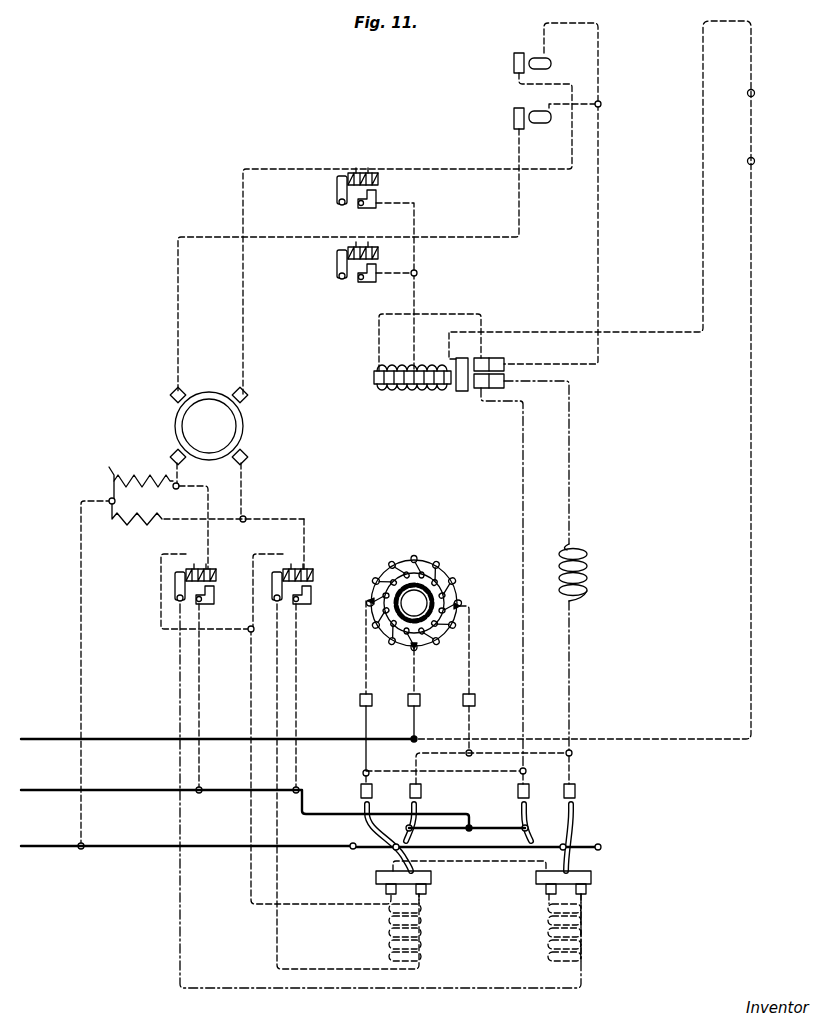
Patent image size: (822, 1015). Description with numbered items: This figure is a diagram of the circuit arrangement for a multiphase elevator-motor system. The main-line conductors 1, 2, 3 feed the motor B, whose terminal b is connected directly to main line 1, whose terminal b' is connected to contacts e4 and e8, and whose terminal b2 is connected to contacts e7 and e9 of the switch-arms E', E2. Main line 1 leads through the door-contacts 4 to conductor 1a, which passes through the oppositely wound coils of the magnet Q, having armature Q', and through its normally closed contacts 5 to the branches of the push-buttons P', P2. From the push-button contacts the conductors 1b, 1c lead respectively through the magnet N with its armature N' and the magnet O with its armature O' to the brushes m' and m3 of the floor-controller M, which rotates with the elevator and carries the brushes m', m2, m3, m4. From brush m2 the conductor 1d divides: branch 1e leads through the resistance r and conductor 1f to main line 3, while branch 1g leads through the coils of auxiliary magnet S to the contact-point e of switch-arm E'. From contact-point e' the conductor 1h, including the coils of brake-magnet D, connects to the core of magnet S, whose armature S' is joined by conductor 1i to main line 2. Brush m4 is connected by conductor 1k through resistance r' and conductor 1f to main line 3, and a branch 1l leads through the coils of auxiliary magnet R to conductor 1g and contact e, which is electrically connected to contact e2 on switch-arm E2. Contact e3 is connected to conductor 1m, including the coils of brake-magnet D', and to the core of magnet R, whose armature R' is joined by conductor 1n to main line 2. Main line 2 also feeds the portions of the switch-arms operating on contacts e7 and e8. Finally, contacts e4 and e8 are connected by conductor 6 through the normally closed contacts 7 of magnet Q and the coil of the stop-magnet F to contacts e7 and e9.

The push-button P' is at (538, 193).
The push-button P2 is at (540, 115).
The conductor 1b is at (407, 233).
The conductor 1c is at (335, 261).
The door-contacts 4 is at (759, 160).
The conductor 1a is at (593, 380).
The magnet N is at (340, 186).
The armature N' is at (386, 275).
The magnet O is at (345, 260).
The armature O' is at (387, 267).
The magnet Q is at (427, 352).
The armature Q' is at (468, 387).
The contacts 5 is at (489, 355).
The contacts 7 is at (496, 390).
The conductor 6 is at (502, 579).
The stop-magnet F is at (557, 567).
The floor-controller M is at (209, 426).
The brush m3 is at (163, 395).
The brush m' is at (252, 393).
The brush m4 is at (165, 452).
The brush m2 is at (254, 455).
The conductor 1k is at (186, 475).
The conductor 1d is at (252, 492).
The conductor 1l is at (150, 594).
The resistance r' is at (133, 472).
The resistance r is at (129, 513).
The conductor 1e is at (234, 507).
The conductor 1f is at (96, 673).
The auxiliary magnet R is at (206, 578).
The armature R' is at (217, 603).
The auxiliary magnet S is at (295, 591).
The armature S' is at (315, 603).
The conductor 1m is at (380, 807).
The conductor 1n is at (212, 698).
The conductor 1g is at (309, 707).
The conductor 1h is at (348, 786).
The conductor 1i is at (303, 698).
The motor B is at (414, 590).
The terminal b' is at (358, 688).
The terminal b is at (405, 694).
The terminal b2 is at (458, 681).
The switch-arm E' is at (456, 844).
The switch-arm E2 is at (556, 844).
The main-line conductor 1 is at (213, 741).
The main-line conductor 2 is at (267, 807).
The main-line conductor 3 is at (313, 848).
The contact e4 is at (429, 786).
The contact e7 is at (489, 777).
The contact e8 is at (510, 784).
The contact e9 is at (582, 775).
The contact-point e is at (381, 894).
The contact-point e' is at (430, 894).
The contact e2 is at (536, 897).
The contact e3 is at (595, 895).
The brake-magnet D is at (414, 927).
The brake-magnet D' is at (579, 927).